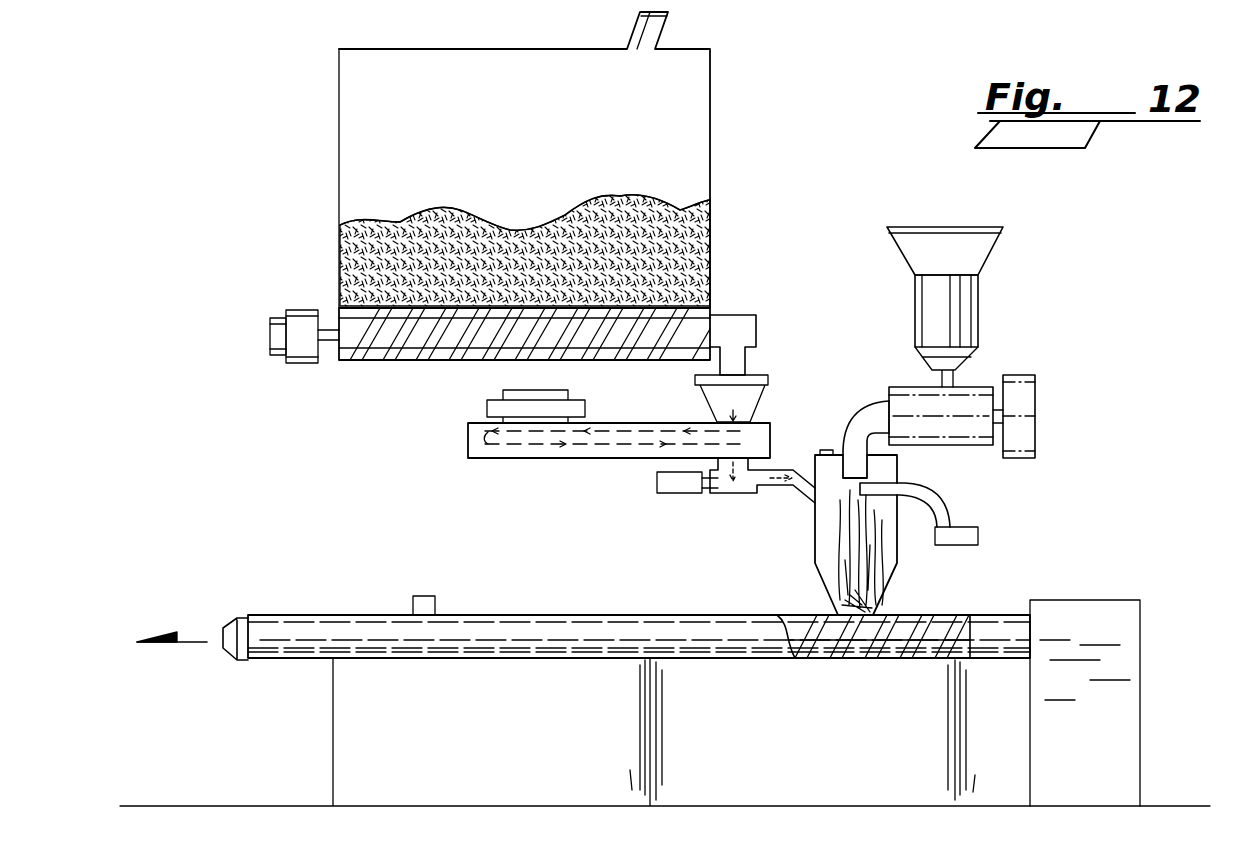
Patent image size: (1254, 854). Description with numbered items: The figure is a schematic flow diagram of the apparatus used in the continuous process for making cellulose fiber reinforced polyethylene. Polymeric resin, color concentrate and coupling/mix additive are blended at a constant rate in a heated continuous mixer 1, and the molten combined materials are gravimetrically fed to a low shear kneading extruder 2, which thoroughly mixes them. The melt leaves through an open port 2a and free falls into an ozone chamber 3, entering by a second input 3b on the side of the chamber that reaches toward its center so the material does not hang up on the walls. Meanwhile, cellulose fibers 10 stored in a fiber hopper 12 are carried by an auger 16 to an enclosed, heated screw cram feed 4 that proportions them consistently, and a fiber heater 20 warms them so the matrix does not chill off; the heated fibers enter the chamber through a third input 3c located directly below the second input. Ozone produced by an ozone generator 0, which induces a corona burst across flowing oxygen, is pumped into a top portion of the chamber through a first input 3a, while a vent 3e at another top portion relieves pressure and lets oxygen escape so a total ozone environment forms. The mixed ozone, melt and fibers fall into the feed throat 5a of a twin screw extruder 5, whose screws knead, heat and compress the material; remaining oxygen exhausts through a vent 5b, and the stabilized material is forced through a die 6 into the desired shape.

The fiber hopper 12 is at (712, 104).
The cellulose fibers 10 is at (711, 260).
The auger 16 is at (409, 361).
The fiber heater 20 is at (512, 460).
The screw cram feed 4 is at (740, 493).
The ozone chamber 3 is at (889, 586).
The first input 3a is at (912, 478).
The second input 3b is at (858, 452).
The third input 3c is at (797, 490).
The vent 3e is at (827, 449).
The ozone generator 0 is at (963, 546).
The low shear kneading extruder 2 is at (960, 429).
The open port 2a is at (886, 402).
The continuous mixer 1 is at (978, 310).
The twin screw extruder 5 is at (572, 614).
The feed throat 5a is at (822, 602).
The vent 5b is at (410, 598).
The die 6 is at (231, 617).